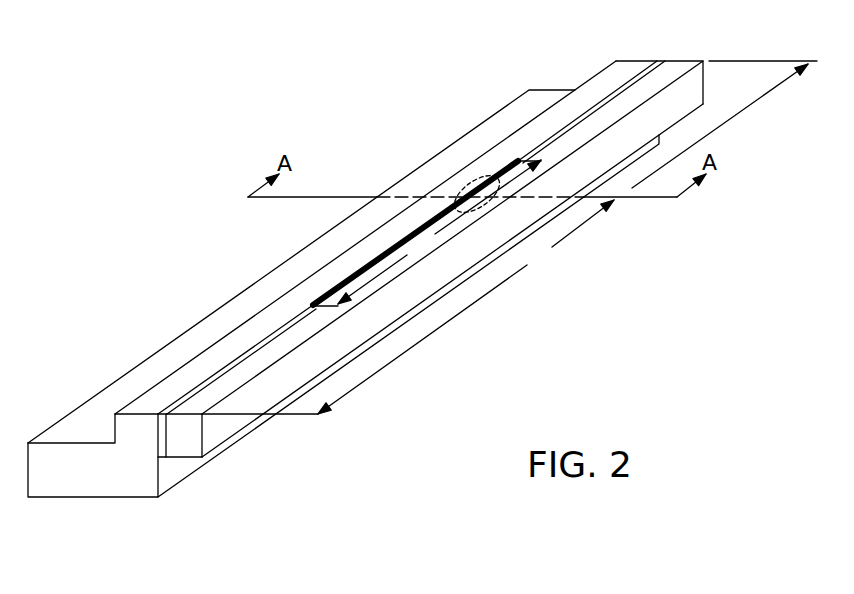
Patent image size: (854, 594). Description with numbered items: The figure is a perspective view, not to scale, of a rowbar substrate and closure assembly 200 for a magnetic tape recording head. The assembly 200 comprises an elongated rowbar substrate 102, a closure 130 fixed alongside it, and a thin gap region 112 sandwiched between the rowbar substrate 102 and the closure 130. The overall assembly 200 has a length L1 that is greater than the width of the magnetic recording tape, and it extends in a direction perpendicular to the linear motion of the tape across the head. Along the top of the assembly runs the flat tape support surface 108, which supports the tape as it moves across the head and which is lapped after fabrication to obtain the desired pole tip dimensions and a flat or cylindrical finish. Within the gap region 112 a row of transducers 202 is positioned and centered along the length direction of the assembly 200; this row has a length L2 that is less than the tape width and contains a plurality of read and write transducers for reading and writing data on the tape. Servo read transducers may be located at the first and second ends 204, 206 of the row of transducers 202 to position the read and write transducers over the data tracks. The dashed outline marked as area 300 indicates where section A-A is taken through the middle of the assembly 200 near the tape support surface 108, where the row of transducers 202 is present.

The rowbar substrate 102 is at (88, 498).
The flat tape support surface 108 is at (172, 387).
The gap region 112 is at (162, 460).
The closure 130 is at (207, 437).
The rowbar substrate and closure assembly 200 is at (601, 316).
The row of transducers 202 is at (365, 268).
The first end of the row of transducers 204 is at (313, 305).
The second end of the row of transducers 206 is at (515, 160).
The area of section A-A (gap region) 300 is at (470, 183).